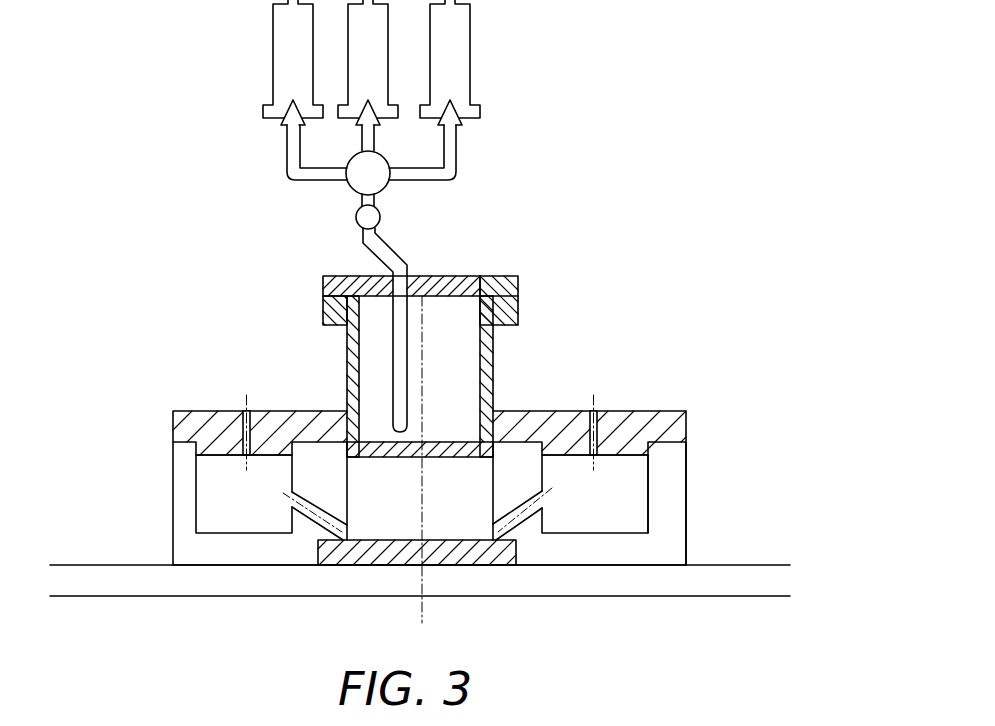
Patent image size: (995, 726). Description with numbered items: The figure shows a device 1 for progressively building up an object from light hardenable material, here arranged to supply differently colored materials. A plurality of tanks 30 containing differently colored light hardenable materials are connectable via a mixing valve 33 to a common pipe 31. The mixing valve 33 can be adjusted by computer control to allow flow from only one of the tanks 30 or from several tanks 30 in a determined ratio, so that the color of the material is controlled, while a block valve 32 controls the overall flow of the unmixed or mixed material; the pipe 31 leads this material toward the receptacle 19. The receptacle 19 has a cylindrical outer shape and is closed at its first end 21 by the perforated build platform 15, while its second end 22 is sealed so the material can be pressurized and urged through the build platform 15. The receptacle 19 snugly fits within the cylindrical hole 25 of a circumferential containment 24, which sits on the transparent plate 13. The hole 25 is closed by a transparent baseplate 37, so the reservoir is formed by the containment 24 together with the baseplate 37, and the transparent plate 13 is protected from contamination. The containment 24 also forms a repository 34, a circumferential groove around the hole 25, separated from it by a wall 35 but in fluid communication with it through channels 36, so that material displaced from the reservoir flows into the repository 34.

The device 1 is at (403, 329).
The transparent plate 13 is at (85, 578).
The build platform 15 is at (497, 421).
The receptacle 19 is at (487, 337).
The first end 21 is at (347, 450).
The second end 22 is at (497, 277).
The containment 24 is at (670, 472).
The hole 25 is at (380, 513).
The tanks 30 is at (302, 18).
The common pipe 31 is at (384, 252).
The block valve 32 is at (362, 177).
The mixing valve 33 is at (366, 217).
The repository 34 is at (623, 508).
The wall 35 is at (507, 493).
The channels 36 is at (528, 520).
The baseplate 37 is at (448, 557).